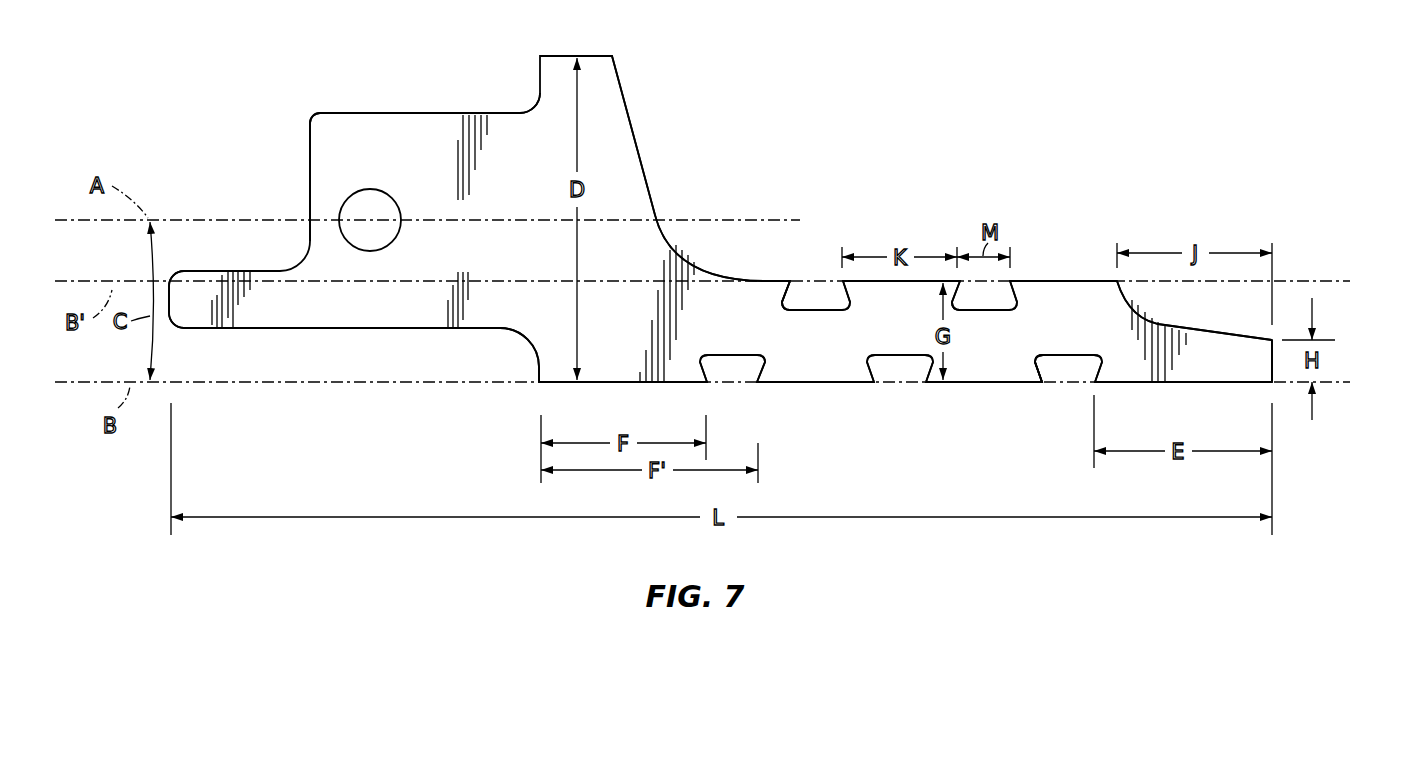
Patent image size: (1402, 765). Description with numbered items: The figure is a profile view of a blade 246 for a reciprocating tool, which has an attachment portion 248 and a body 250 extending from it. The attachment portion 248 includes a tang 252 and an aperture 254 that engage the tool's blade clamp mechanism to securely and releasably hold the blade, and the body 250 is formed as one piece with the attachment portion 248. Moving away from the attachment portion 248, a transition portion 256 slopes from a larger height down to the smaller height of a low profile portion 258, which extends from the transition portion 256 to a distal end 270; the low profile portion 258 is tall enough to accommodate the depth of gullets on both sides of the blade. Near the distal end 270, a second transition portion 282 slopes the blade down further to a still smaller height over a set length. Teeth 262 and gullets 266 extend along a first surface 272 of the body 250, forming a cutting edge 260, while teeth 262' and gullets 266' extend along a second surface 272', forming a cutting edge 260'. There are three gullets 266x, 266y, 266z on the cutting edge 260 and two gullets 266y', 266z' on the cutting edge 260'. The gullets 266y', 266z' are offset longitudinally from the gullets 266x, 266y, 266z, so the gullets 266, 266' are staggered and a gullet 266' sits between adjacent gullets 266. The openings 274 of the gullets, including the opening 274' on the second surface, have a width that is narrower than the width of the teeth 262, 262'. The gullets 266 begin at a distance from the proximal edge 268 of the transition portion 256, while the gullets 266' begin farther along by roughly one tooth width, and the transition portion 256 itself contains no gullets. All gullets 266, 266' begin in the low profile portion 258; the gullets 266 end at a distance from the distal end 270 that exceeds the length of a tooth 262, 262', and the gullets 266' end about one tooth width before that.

The blade 246 is at (990, 122).
The attachment portion 248 is at (463, 113).
The body 250 is at (338, 135).
The tang 252 is at (207, 290).
The aperture 254 is at (392, 200).
The transition portion 256 is at (603, 70).
The low profile portion 258 is at (1238, 372).
The cutting edge 260 is at (984, 441).
The cutting edge 260' is at (1065, 224).
The teeth 262 is at (899, 422).
The teeth 262' is at (991, 228).
The gullets 266 is at (1045, 428).
The gullets 266' is at (1011, 243).
The gullet 266x is at (730, 370).
The gullet 266y is at (895, 396).
The gullet 266y' is at (796, 242).
The gullet 266z is at (1063, 413).
The gullet 266z' is at (1016, 255).
The proximal edge 268 is at (535, 362).
The distal end 270 is at (1272, 340).
The first surface 272 is at (517, 399).
The second surface 272' is at (710, 215).
The openings 274 is at (989, 401).
The opening 274' is at (812, 219).
The second transition portion 282 is at (1198, 330).